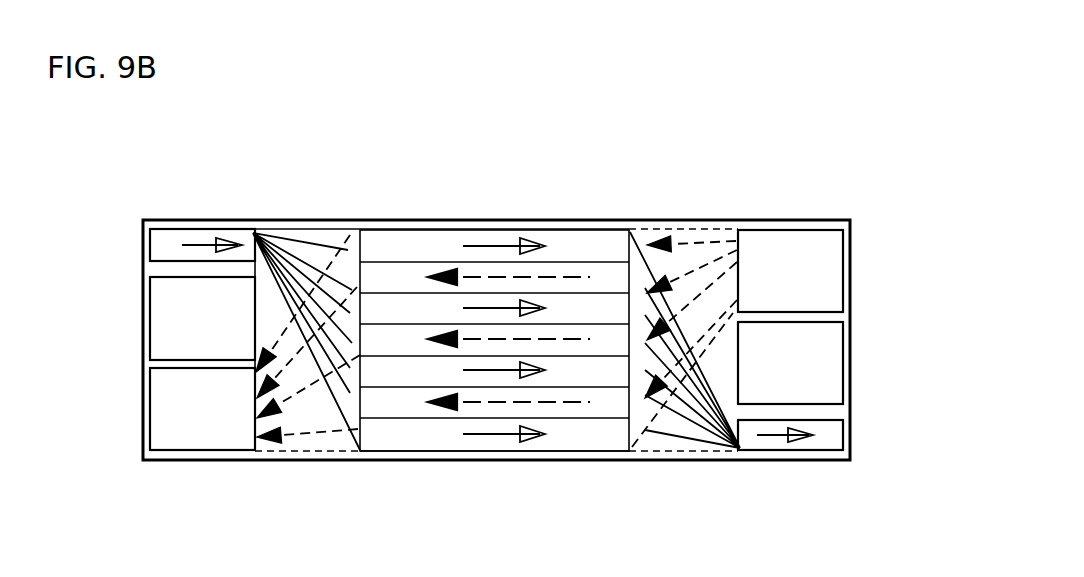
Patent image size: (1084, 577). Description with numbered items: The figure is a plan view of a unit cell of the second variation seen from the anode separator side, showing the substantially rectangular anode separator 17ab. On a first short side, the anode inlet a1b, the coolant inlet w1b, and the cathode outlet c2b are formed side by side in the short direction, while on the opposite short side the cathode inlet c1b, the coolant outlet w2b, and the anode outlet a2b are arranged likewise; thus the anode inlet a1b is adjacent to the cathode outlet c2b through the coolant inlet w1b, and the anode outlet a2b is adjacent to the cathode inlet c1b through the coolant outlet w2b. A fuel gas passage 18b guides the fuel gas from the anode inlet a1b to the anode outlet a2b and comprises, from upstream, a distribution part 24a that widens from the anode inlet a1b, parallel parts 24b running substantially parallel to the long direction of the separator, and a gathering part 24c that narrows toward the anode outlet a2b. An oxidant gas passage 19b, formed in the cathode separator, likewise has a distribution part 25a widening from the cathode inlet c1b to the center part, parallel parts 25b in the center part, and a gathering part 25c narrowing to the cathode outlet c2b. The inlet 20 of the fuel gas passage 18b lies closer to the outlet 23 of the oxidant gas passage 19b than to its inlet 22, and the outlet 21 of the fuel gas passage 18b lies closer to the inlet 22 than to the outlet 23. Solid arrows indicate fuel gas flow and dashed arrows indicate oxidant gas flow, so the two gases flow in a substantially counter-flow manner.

The anode separator 17ab is at (852, 222).
The fuel gas passage 18b is at (453, 240).
The oxidant gas passage 19b is at (553, 440).
The inlet of the fuel gas passage 20 is at (252, 229).
The outlet of the fuel gas passage 21 is at (741, 450).
The inlet of the oxidant gas passage 22 is at (747, 238).
The outlet of the oxidant gas passage 23 is at (253, 428).
The distribution part 24a is at (297, 240).
The parallel parts 24b is at (399, 243).
The gathering part 24c is at (673, 443).
The distribution part 25a is at (683, 237).
The parallel parts 25b is at (600, 440).
The gathering part 25c is at (298, 437).
The anode inlet a1b is at (153, 246).
The coolant inlet w1b is at (153, 322).
The cathode outlet c2b is at (153, 418).
The cathode inlet c1b is at (840, 277).
The coolant outlet w2b is at (840, 362).
The anode outlet a2b is at (840, 438).